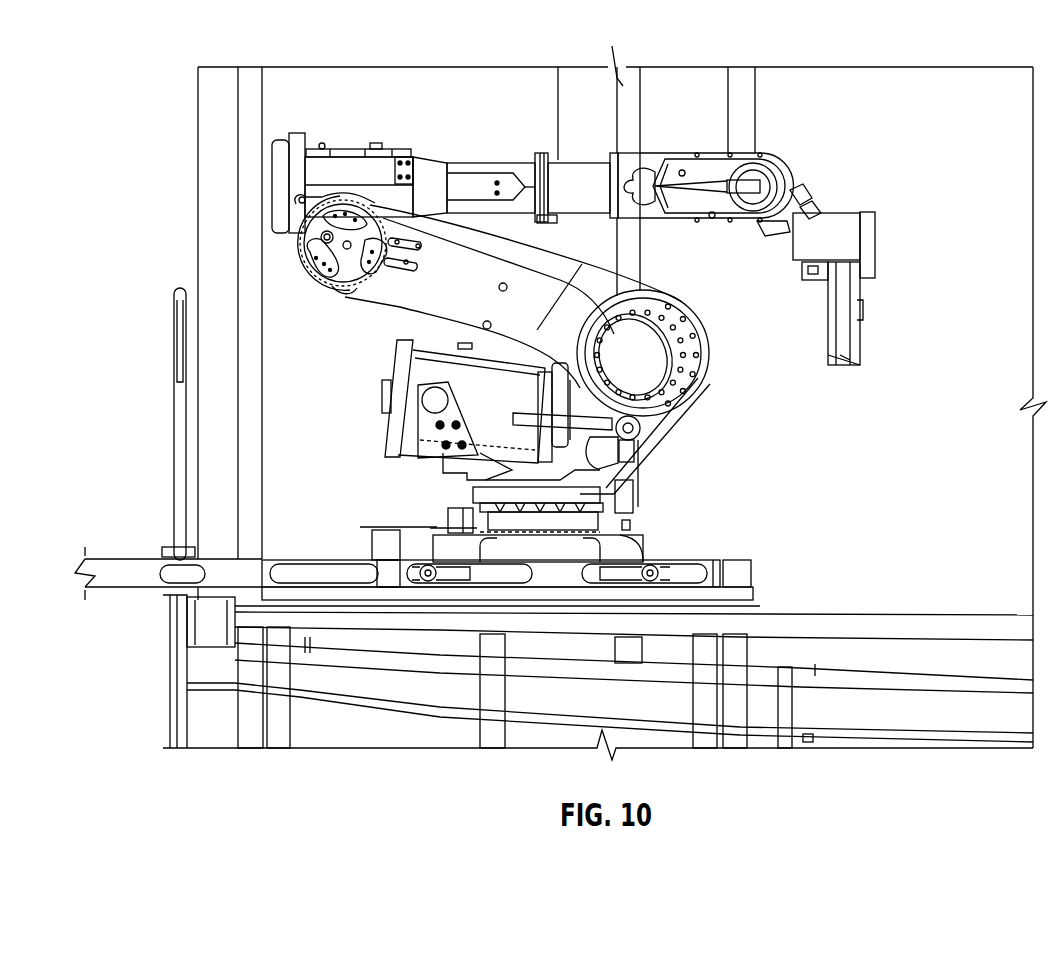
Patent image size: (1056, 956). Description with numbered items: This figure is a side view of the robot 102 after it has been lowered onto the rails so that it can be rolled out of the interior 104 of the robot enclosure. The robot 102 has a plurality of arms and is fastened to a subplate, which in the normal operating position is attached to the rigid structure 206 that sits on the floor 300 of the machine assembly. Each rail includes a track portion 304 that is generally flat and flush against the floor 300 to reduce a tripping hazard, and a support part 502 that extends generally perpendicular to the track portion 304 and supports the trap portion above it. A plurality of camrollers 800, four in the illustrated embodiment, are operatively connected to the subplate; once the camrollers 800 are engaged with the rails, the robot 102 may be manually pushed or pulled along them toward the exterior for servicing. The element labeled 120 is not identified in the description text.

The interior 104 is at (850, 80).
The robot 102 is at (489, 151).
The carriage platform 120 is at (328, 550).
The camrollers 800 is at (428, 565).
The support part 502 is at (135, 556).
The floor 300 is at (752, 598).
The track portion 304 is at (495, 598).
The rigid structure 206 is at (567, 602).